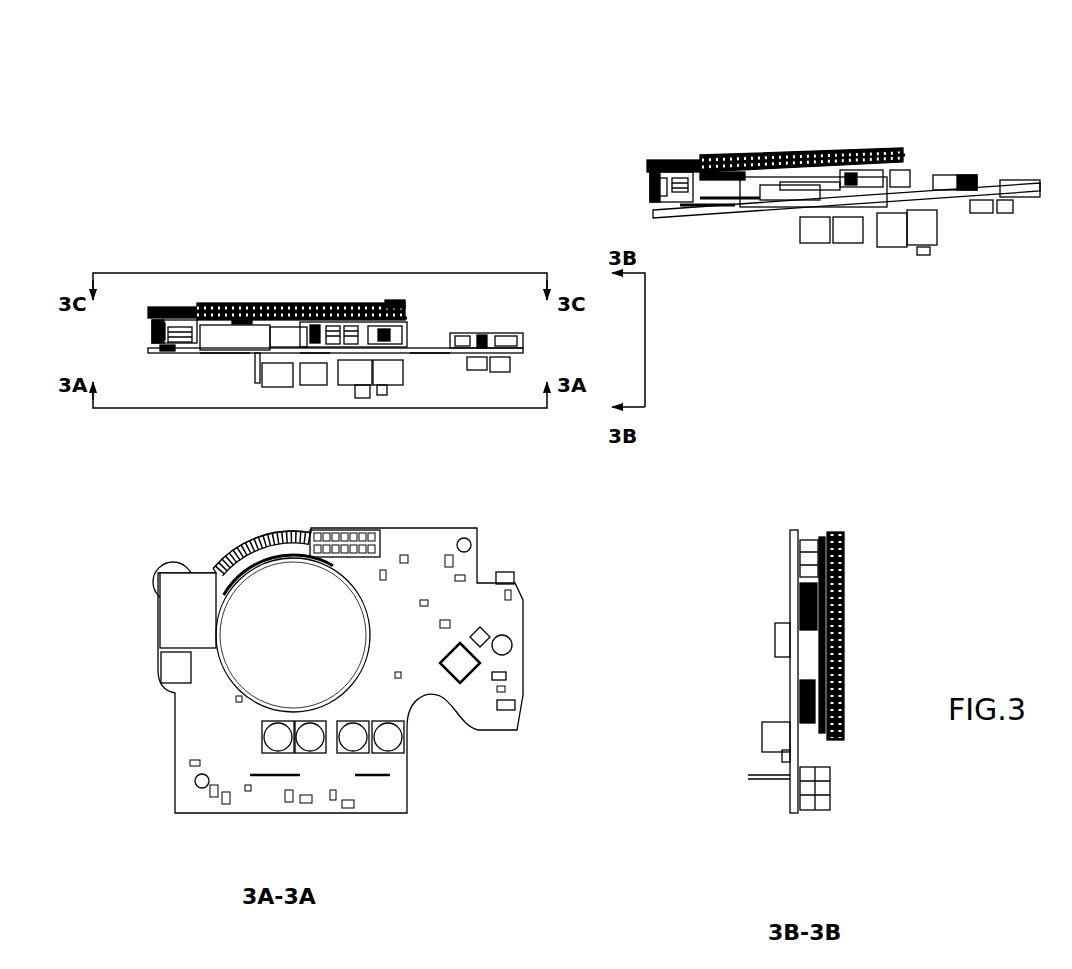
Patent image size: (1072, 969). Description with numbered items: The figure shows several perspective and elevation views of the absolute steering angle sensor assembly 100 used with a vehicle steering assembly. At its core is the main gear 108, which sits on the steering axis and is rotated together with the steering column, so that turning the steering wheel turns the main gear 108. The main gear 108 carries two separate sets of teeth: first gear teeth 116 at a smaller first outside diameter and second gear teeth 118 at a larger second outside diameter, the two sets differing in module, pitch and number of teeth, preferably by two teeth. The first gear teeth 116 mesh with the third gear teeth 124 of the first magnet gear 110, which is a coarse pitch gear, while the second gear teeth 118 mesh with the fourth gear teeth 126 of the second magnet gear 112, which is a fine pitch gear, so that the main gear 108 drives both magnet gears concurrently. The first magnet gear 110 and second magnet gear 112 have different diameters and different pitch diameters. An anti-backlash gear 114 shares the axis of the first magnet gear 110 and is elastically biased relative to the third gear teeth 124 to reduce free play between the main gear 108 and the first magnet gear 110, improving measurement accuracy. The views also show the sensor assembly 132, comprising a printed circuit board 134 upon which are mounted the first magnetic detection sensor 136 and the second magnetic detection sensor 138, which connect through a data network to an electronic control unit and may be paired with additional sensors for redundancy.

The absolute steering angle sensor assembly 100 is at (287, 240).
The main gear 108 is at (254, 563).
The first magnet gear 110 is at (407, 357).
The second magnet gear 112 is at (155, 327).
The anti-backlash gear 114 is at (407, 318).
The first gear teeth 116 is at (242, 323).
The second gear teeth 118 is at (230, 305).
The third gear teeth 124 is at (395, 305).
The fourth gear teeth 126 is at (172, 305).
The sensor assembly 132 is at (950, 222).
The printed circuit board 134 is at (198, 736).
The first magnetic detection sensor 136 is at (795, 540).
The second magnetic detection sensor 138 is at (165, 350).